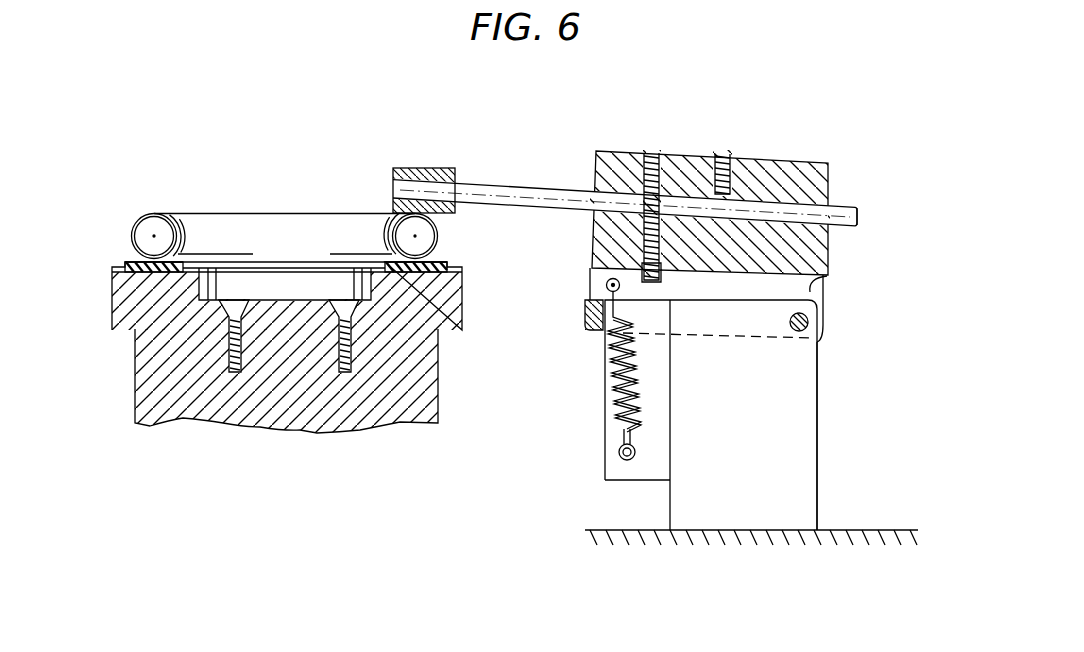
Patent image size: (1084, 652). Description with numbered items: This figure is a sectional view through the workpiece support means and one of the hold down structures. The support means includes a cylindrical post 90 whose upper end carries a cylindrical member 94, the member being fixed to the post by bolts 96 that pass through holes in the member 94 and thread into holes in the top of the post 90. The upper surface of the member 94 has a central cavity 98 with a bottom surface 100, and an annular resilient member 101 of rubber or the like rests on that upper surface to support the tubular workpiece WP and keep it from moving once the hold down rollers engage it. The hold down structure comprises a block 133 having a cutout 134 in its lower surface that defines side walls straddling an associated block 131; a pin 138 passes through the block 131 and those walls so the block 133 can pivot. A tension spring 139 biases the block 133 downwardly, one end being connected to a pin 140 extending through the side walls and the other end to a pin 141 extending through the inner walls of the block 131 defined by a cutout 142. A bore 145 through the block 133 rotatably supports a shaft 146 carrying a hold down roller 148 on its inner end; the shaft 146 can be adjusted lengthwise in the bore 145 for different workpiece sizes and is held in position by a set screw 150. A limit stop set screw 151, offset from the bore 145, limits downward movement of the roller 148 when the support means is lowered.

The tubular workpiece WP is at (141, 211).
The cylindrical post 90 is at (135, 399).
The cylindrical member 94 is at (112, 306).
The bolts 96 is at (243, 300).
The central cavity 98 is at (213, 275).
The bottom surface 100 is at (278, 298).
The annular resilient member 101 is at (450, 260).
The block 131 is at (800, 481).
The block 133 is at (788, 167).
The cutout 134 is at (824, 292).
The pin 138 is at (798, 331).
The tension spring 139 is at (607, 392).
The pin 140 is at (606, 285).
The pin 141 is at (619, 456).
The cutout 142 is at (672, 465).
The bore 145 is at (829, 204).
The shaft 146 is at (840, 227).
The hold down roller 148 is at (422, 169).
The set screw 150 is at (723, 158).
The limit stop set screw 151 is at (613, 148).